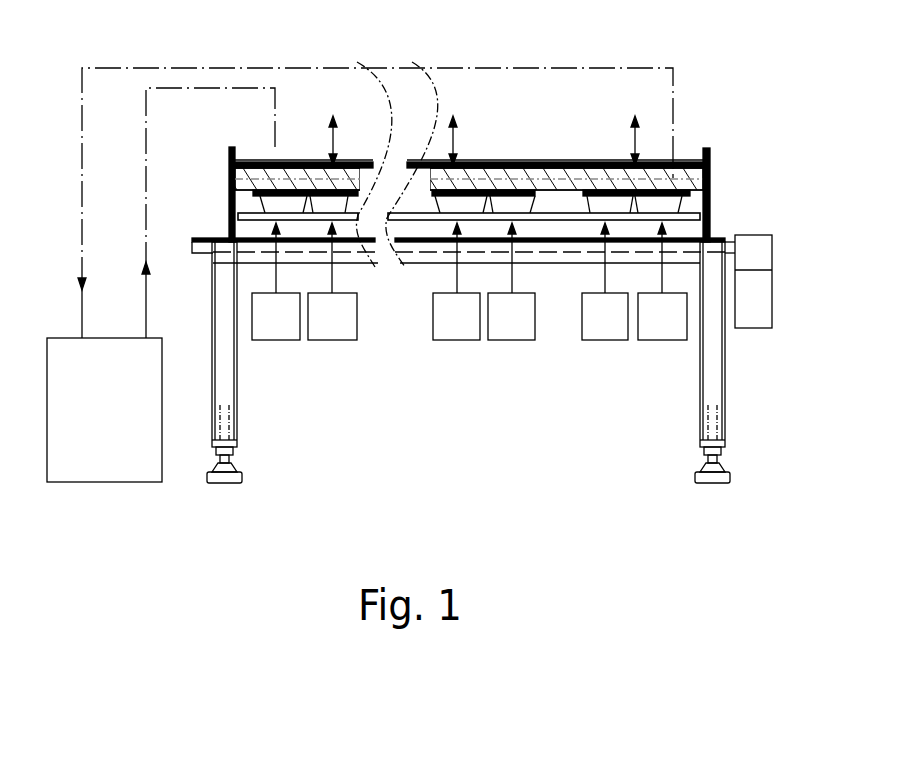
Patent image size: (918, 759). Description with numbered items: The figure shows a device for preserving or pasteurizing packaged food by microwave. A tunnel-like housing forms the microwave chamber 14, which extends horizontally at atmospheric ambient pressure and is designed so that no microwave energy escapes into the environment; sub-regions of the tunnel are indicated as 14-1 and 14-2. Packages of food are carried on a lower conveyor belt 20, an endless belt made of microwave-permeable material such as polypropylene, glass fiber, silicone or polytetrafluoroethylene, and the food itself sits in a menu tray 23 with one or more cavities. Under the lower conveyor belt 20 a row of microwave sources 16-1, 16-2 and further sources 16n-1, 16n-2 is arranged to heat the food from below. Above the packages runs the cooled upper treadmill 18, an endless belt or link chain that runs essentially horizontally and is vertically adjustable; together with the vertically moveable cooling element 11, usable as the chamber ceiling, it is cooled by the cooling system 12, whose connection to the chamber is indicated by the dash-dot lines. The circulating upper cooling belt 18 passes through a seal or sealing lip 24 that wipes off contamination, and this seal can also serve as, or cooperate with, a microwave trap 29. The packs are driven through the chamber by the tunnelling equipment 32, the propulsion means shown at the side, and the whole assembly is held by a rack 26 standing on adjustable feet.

The vertically moveable cooling element 11 is at (648, 163).
The cooling system 12 is at (104, 410).
The microwave chamber 14 is at (333, 105).
The microwave chamber section 14-1 is at (633, 105).
The microwave chamber section 14-2 is at (453, 105).
The microwave source 16-1 is at (662, 327).
The microwave source 16-2 is at (595, 327).
The microwave source 16n-1 is at (342, 330).
The microwave source 16n-2 is at (273, 330).
The upper treadmill 18 is at (703, 189).
The lower conveyor belt 20 is at (705, 222).
The menu tray 23 is at (683, 205).
The sealing lip 24 is at (707, 150).
The rack 26 is at (697, 418).
The microwave trap 29 is at (712, 177).
The tunnelling equipment 32 is at (777, 310).